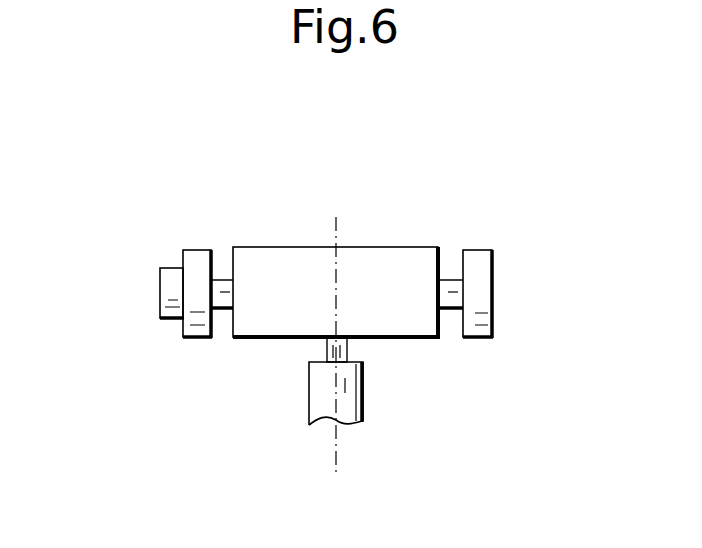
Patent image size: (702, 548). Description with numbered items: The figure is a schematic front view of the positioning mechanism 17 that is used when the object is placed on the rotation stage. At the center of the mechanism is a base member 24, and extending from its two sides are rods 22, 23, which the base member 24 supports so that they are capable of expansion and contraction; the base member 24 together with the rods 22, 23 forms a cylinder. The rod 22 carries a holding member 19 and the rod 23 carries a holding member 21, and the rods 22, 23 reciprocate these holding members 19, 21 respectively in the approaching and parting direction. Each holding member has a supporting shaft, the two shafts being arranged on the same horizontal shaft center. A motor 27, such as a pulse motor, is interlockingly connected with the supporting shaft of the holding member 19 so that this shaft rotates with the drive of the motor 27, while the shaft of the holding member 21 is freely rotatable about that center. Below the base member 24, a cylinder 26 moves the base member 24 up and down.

The positioning mechanism 17 is at (292, 247).
The base member 24 is at (390, 247).
The holding member 19 is at (182, 334).
The holding member 21 is at (480, 248).
The rod 22 is at (222, 310).
The rod 23 is at (452, 310).
The cylinder 26 is at (363, 390).
The motor 27 is at (160, 288).